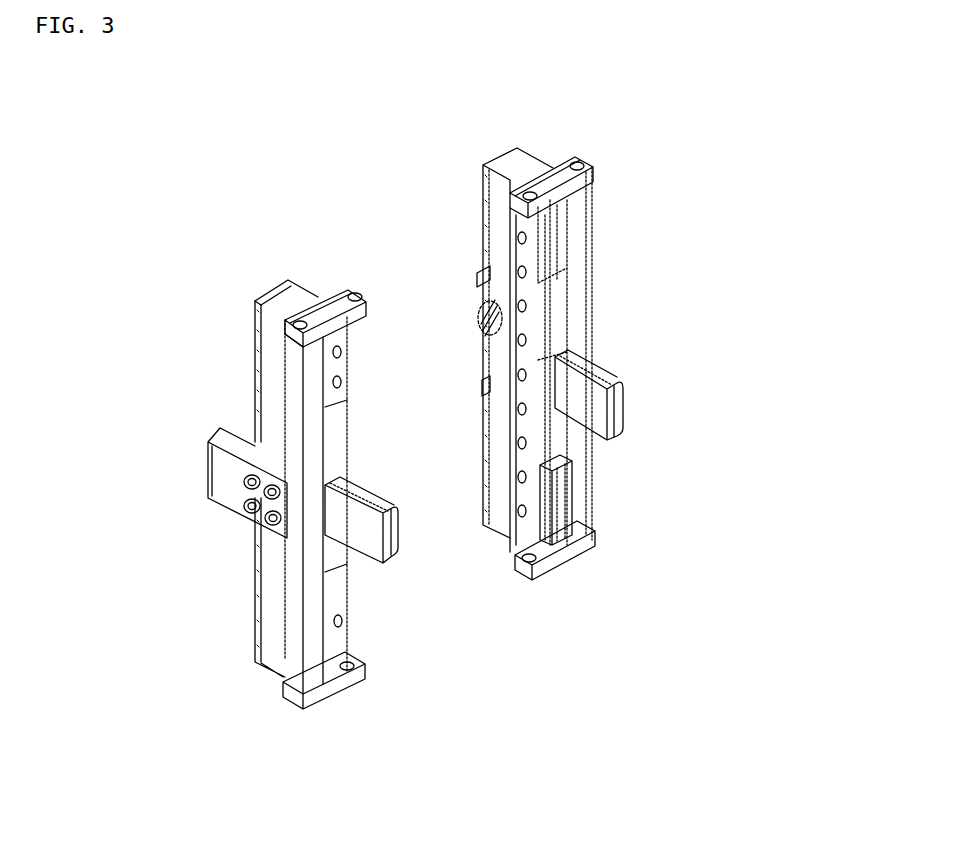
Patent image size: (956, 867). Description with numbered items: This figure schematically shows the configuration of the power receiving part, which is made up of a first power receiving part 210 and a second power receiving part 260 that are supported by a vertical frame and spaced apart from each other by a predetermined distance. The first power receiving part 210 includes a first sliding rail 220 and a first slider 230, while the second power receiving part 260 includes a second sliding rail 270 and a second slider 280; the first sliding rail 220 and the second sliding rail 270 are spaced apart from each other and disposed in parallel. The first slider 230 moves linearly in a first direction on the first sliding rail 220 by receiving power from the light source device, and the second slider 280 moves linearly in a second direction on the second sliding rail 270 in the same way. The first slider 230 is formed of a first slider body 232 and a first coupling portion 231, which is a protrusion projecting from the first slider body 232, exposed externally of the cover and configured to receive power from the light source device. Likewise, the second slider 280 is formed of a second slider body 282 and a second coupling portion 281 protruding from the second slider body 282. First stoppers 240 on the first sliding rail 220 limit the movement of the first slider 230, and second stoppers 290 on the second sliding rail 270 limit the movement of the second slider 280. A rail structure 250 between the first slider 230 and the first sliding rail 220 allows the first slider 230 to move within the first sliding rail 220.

The first power receiving part 210 is at (210, 317).
The first sliding rail 220 is at (298, 610).
The first slider 230 is at (490, 628).
The first coupling portion 231 is at (380, 545).
The first slider body 232 is at (345, 578).
The first stoppers 240 is at (322, 302).
The rail structure 250 is at (330, 403).
The second power receiving part 260 is at (670, 362).
The second sliding rail 270 is at (580, 238).
The second slider 280 is at (743, 505).
The second coupling portion 281 is at (614, 416).
The second slider body 282 is at (570, 458).
The second stoppers 290 is at (553, 183).